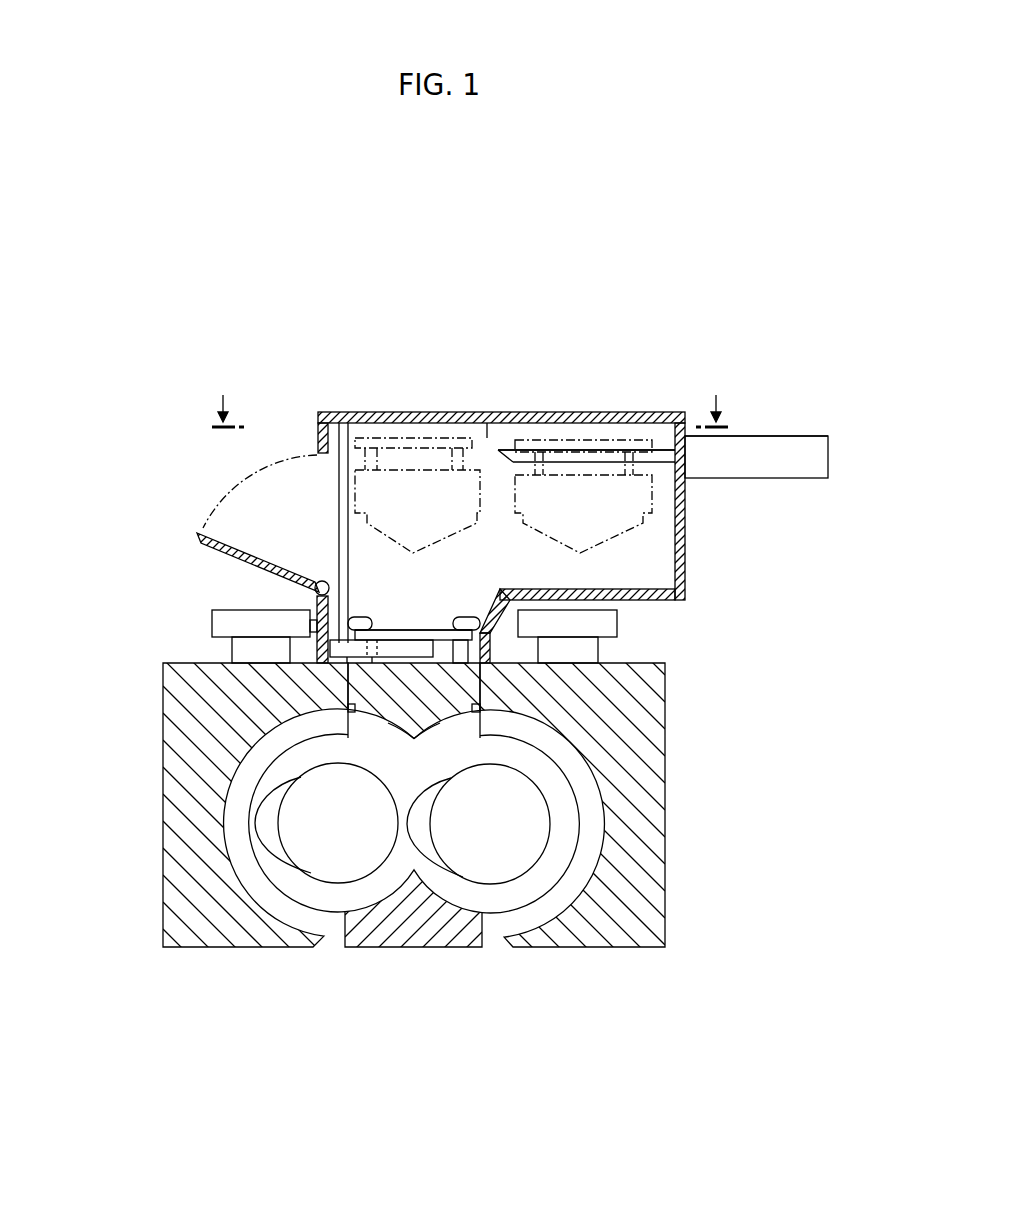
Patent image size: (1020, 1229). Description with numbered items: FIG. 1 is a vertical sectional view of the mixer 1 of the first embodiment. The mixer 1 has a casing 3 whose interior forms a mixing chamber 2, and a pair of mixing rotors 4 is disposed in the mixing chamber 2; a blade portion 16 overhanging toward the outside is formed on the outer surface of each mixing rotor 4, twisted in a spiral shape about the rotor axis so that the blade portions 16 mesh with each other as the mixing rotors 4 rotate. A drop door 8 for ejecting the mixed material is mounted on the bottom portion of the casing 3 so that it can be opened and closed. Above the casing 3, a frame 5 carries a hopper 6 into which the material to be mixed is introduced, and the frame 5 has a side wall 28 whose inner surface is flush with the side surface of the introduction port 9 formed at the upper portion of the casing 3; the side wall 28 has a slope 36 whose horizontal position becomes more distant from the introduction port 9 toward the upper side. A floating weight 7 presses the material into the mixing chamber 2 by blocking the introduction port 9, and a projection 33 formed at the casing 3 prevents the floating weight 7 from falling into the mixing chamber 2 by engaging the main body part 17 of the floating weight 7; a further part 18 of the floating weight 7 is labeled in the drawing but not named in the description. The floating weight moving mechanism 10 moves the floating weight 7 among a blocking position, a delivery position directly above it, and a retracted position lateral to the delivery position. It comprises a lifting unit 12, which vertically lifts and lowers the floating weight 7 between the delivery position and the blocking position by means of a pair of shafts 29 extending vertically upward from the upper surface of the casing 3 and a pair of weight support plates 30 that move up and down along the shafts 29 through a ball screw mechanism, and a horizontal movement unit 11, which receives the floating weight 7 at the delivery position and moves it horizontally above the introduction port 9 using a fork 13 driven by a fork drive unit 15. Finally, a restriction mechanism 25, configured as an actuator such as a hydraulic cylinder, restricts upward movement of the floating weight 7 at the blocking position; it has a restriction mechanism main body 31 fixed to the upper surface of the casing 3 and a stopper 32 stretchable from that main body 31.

The mixer 1 is at (208, 356).
The mixing chamber 2 is at (560, 842).
The casing 3 is at (660, 720).
The mixing rotor 4 is at (320, 850).
The frame 5 is at (450, 412).
The hopper 6 is at (212, 542).
The floating weight 7 is at (400, 480).
The drop door 8 is at (460, 947).
The introduction port 9 is at (457, 695).
The floating weight moving mechanism 10 is at (490, 433).
The horizontal movement unit 11 is at (742, 432).
The lifting unit 12 is at (310, 490).
The fork 13 is at (655, 457).
The fork drive unit 15 is at (790, 478).
The blade portion 16 is at (265, 828).
The main body part 17 is at (403, 727).
The coupling plate 18 is at (400, 630).
The restriction mechanism 25 is at (205, 622).
The side wall 28 is at (488, 647).
The shaft 29 is at (340, 440).
The weight support plate 30 is at (345, 648).
The restriction mechanism main body 31 is at (228, 640).
The stopper 32 is at (365, 617).
The projection 33 is at (352, 712).
The slope 36 is at (480, 625).